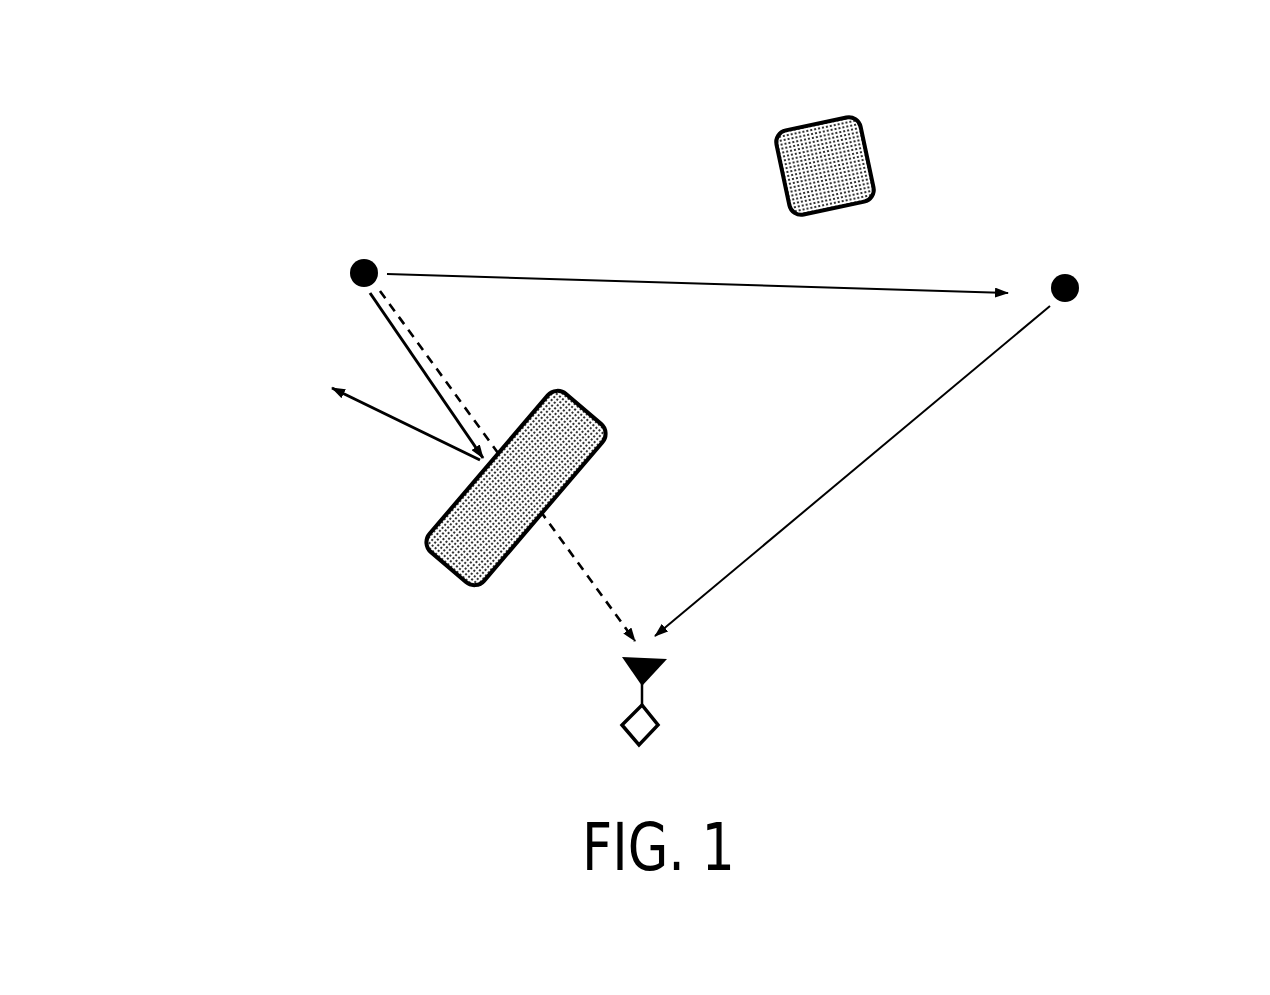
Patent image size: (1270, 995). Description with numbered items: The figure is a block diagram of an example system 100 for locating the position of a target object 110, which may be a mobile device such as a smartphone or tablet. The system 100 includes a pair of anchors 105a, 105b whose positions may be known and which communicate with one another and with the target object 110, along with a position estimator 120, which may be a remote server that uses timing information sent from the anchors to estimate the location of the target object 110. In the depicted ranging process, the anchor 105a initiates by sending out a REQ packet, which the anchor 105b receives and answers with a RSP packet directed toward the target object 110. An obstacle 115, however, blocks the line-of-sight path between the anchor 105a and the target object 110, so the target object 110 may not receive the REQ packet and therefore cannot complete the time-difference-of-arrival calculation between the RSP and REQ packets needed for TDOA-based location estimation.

The system 100 is at (747, 59).
The anchor 105a is at (359, 284).
The anchor 105b is at (1080, 289).
The target object 110 is at (667, 659).
The obstacle 115 is at (612, 428).
The position estimator 120 is at (870, 145).